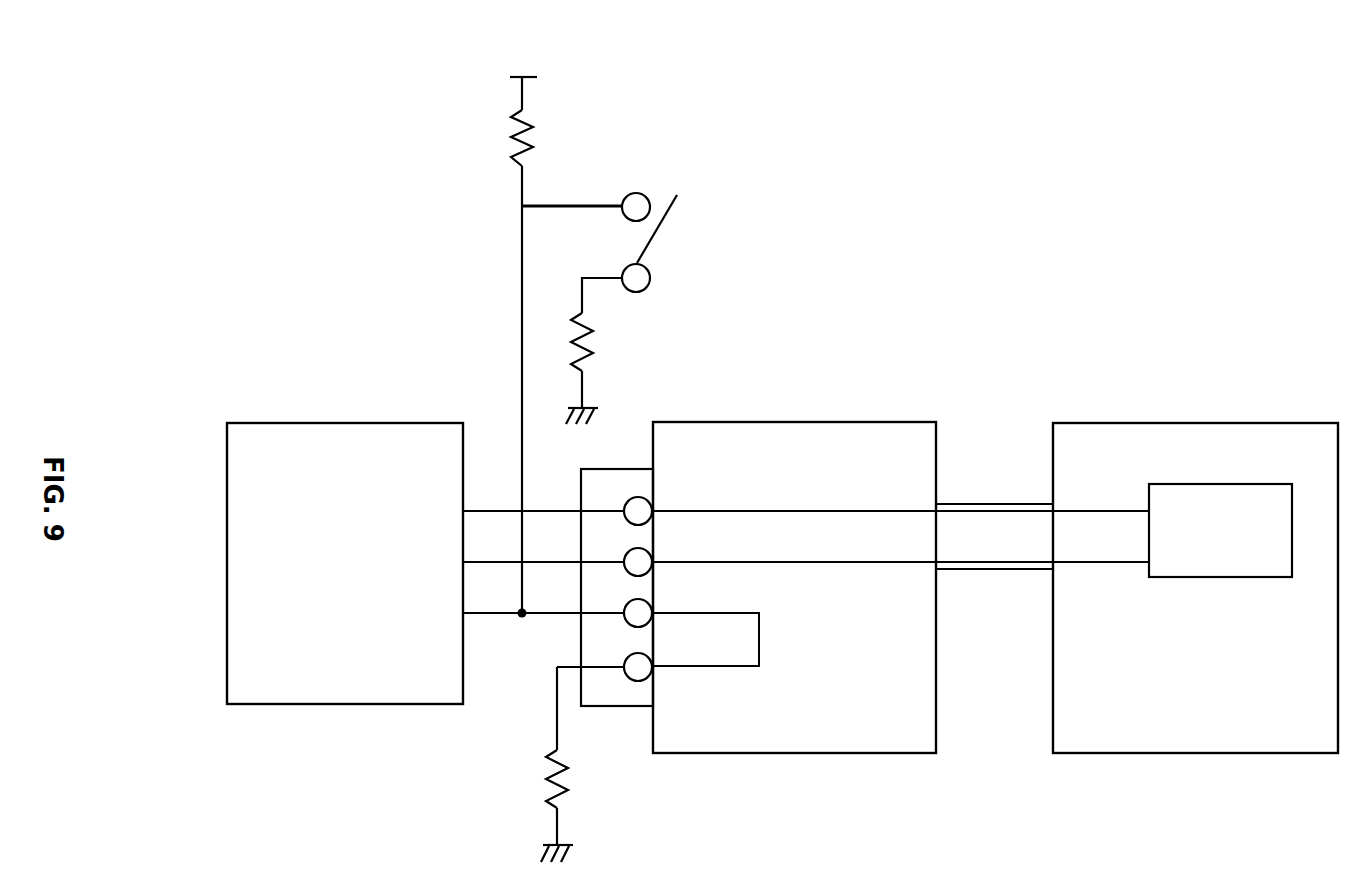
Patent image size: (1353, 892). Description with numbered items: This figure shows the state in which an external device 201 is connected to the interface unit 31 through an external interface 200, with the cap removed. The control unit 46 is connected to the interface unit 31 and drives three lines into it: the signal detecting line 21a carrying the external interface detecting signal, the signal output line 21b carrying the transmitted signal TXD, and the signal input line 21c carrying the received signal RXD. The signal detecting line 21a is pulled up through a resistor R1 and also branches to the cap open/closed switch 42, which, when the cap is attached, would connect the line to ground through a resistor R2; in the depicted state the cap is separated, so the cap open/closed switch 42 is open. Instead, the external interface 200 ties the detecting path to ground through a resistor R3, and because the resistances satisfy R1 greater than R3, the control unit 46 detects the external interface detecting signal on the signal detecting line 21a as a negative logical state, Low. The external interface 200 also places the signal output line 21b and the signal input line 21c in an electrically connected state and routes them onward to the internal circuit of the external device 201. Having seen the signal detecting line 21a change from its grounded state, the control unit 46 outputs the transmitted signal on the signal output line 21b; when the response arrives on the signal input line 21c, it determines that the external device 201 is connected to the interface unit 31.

The resistor R1 is at (531, 123).
The resistor R2 is at (597, 342).
The resistor R3 is at (570, 780).
The signal detecting line 21a is at (556, 203).
The signal output line 21b is at (488, 508).
The signal input line 21c is at (547, 560).
The cap open/closed switch 42 is at (653, 237).
The control unit 46 is at (417, 422).
The interface unit 31 is at (612, 467).
The external interface 200 is at (887, 420).
The external device 201 is at (1295, 422).